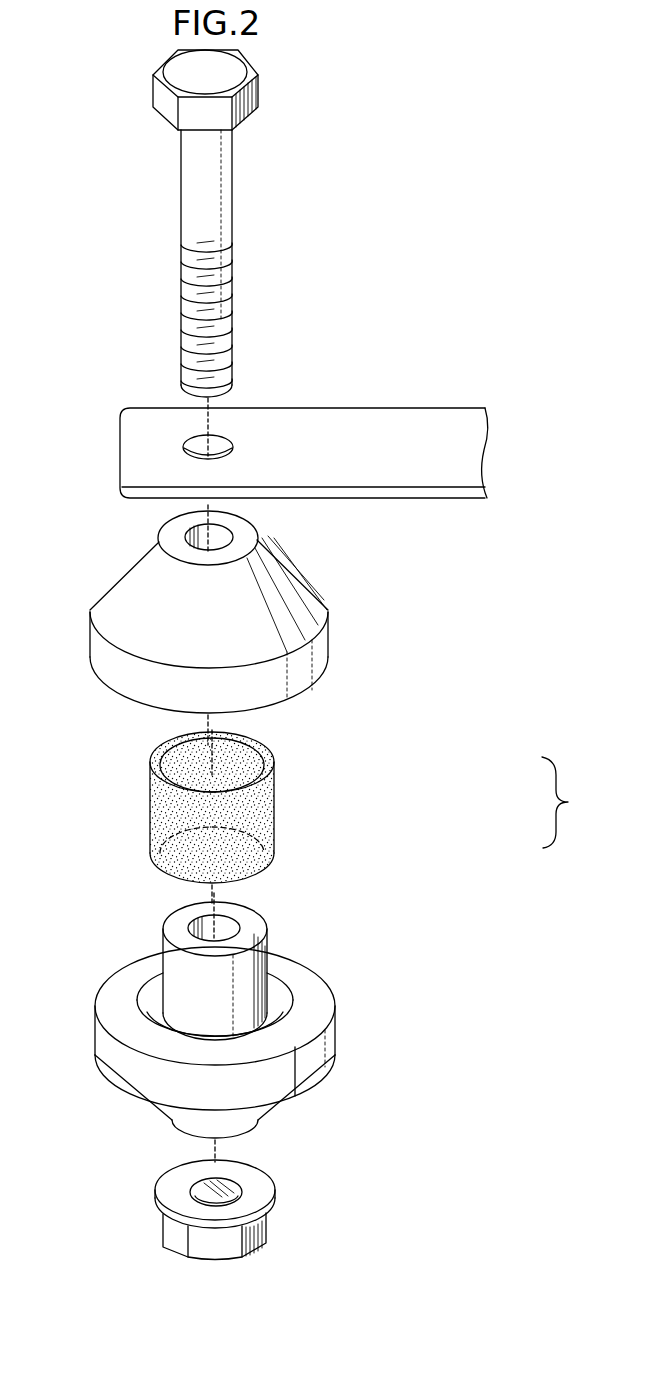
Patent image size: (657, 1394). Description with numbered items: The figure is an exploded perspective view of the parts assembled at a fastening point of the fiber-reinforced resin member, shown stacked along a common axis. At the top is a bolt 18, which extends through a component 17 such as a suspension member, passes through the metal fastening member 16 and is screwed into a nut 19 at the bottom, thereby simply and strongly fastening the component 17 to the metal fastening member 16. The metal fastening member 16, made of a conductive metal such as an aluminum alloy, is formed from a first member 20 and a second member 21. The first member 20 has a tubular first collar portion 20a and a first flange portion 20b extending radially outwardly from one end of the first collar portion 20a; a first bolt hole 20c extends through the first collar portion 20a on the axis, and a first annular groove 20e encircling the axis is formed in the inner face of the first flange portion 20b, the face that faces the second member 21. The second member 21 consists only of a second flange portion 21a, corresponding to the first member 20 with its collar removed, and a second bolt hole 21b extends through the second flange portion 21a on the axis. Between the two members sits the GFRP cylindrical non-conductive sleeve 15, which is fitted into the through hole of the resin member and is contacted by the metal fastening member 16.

The non-conductive sleeve 15 is at (170, 815).
The metal fastening member 16 is at (571, 802).
The component 17 is at (332, 420).
The bolt 18 is at (208, 213).
The nut 19 is at (265, 1237).
The first member 20 is at (300, 992).
The first collar portion 20a is at (250, 960).
The first flange portion 20b is at (236, 1102).
The first bolt hole 20c is at (197, 922).
The first annular groove 20e is at (152, 1013).
The second member 21 is at (322, 621).
The second flange portion 21a is at (305, 697).
The second bolt hole 21b is at (222, 535).